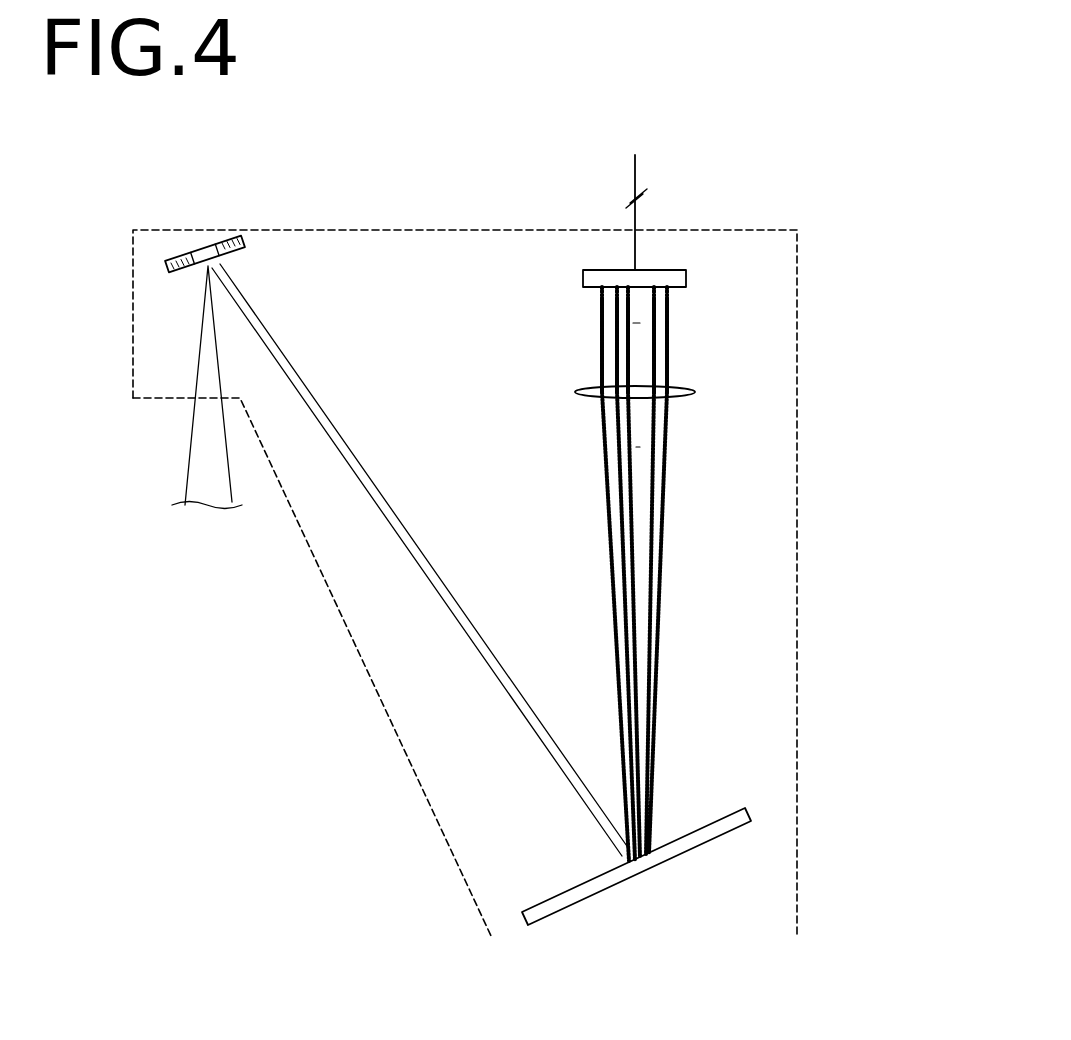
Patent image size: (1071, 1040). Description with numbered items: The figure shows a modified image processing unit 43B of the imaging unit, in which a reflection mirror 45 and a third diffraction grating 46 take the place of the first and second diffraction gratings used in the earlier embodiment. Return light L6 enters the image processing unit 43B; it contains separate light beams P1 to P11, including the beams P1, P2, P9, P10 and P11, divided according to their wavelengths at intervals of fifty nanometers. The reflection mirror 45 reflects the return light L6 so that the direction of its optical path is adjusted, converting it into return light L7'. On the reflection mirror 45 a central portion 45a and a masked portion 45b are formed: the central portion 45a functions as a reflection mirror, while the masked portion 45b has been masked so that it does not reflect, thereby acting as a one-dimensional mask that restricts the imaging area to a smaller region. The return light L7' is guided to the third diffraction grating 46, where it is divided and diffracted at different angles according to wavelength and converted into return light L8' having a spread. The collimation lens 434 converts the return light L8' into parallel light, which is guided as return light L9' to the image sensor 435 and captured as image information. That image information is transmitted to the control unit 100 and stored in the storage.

The image processing unit 43B is at (798, 738).
The control unit 100 is at (678, 138).
The image sensor 435 is at (686, 280).
The collimation lens 434 is at (680, 396).
The reflection mirror 45 is at (241, 257).
The central portion 45a is at (198, 268).
The masked portion 45b is at (237, 255).
The third diffraction grating 46 is at (726, 826).
The return light L6 is at (178, 420).
The return light L7' is at (420, 560).
The return light L8' is at (684, 626).
The return light L9' is at (732, 333).
The separate light beam P1 is at (668, 313).
The separate light beam P2 is at (655, 352).
The separate light beam P9 is at (628, 363).
The separate light beam P10 is at (617, 335).
The separate light beam P11 is at (602, 308).